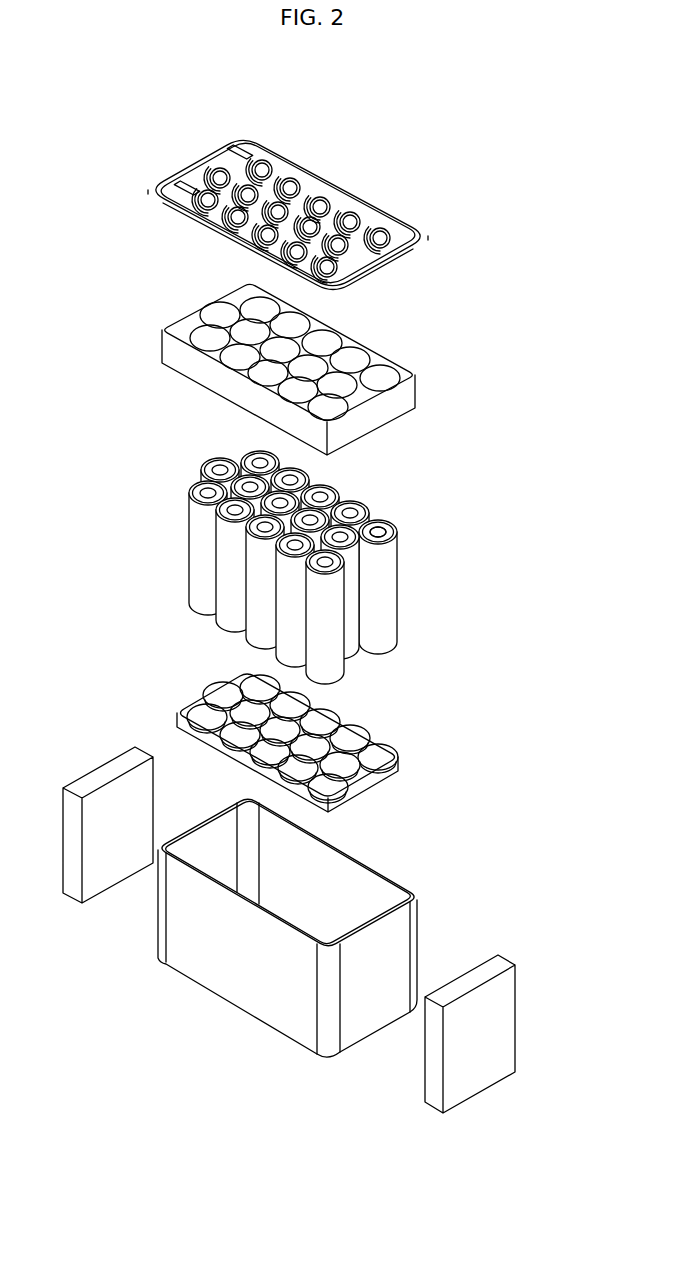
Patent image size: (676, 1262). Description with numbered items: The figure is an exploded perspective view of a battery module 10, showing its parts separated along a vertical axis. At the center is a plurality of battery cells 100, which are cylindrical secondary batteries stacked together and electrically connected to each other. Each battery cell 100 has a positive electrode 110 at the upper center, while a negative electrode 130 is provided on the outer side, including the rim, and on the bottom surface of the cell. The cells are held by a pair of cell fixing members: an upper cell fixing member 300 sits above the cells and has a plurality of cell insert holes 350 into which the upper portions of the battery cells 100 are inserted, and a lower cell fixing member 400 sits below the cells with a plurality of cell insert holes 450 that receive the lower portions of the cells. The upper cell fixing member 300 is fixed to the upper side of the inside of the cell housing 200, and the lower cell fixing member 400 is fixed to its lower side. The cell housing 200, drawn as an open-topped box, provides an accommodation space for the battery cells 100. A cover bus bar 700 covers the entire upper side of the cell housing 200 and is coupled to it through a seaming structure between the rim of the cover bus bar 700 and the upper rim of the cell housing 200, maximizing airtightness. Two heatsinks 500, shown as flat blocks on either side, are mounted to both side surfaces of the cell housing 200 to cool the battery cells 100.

The battery module 10 is at (290, 593).
The cover bus bar 700 is at (325, 214).
The upper cell fixing member 300 is at (327, 369).
The cell insert holes 350 is at (380, 376).
The battery cell 100 is at (336, 578).
The positive electrode 110 is at (378, 527).
The negative electrode 130 is at (378, 652).
The lower cell fixing member 400 is at (314, 735).
The cell insert holes 450 is at (208, 715).
The cell housing 200 is at (327, 928).
The heatsink 500 is at (307, 906).